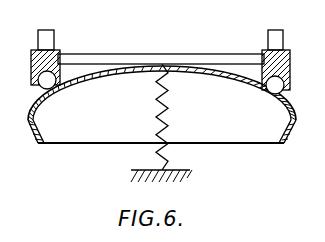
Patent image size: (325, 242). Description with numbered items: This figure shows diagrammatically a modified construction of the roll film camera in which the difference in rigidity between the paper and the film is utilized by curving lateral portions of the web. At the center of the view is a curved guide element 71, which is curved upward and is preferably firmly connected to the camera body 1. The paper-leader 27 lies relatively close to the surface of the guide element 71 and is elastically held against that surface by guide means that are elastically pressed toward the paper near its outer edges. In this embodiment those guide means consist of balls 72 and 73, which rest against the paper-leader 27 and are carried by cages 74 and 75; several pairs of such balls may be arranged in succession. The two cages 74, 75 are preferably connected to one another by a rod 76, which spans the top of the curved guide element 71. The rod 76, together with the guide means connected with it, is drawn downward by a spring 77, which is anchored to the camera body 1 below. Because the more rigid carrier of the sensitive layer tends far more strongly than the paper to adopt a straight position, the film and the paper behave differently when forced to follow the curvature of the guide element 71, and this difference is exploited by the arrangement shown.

The camera body 1 is at (134, 172).
The paper-leader 27 is at (93, 72).
The curved guide element 71 is at (30, 122).
The ball 72 is at (38, 87).
The ball 73 is at (281, 90).
The cage 74 is at (53, 58).
The cage 75 is at (268, 55).
The rod 76 is at (185, 59).
The spring 77 is at (165, 132).